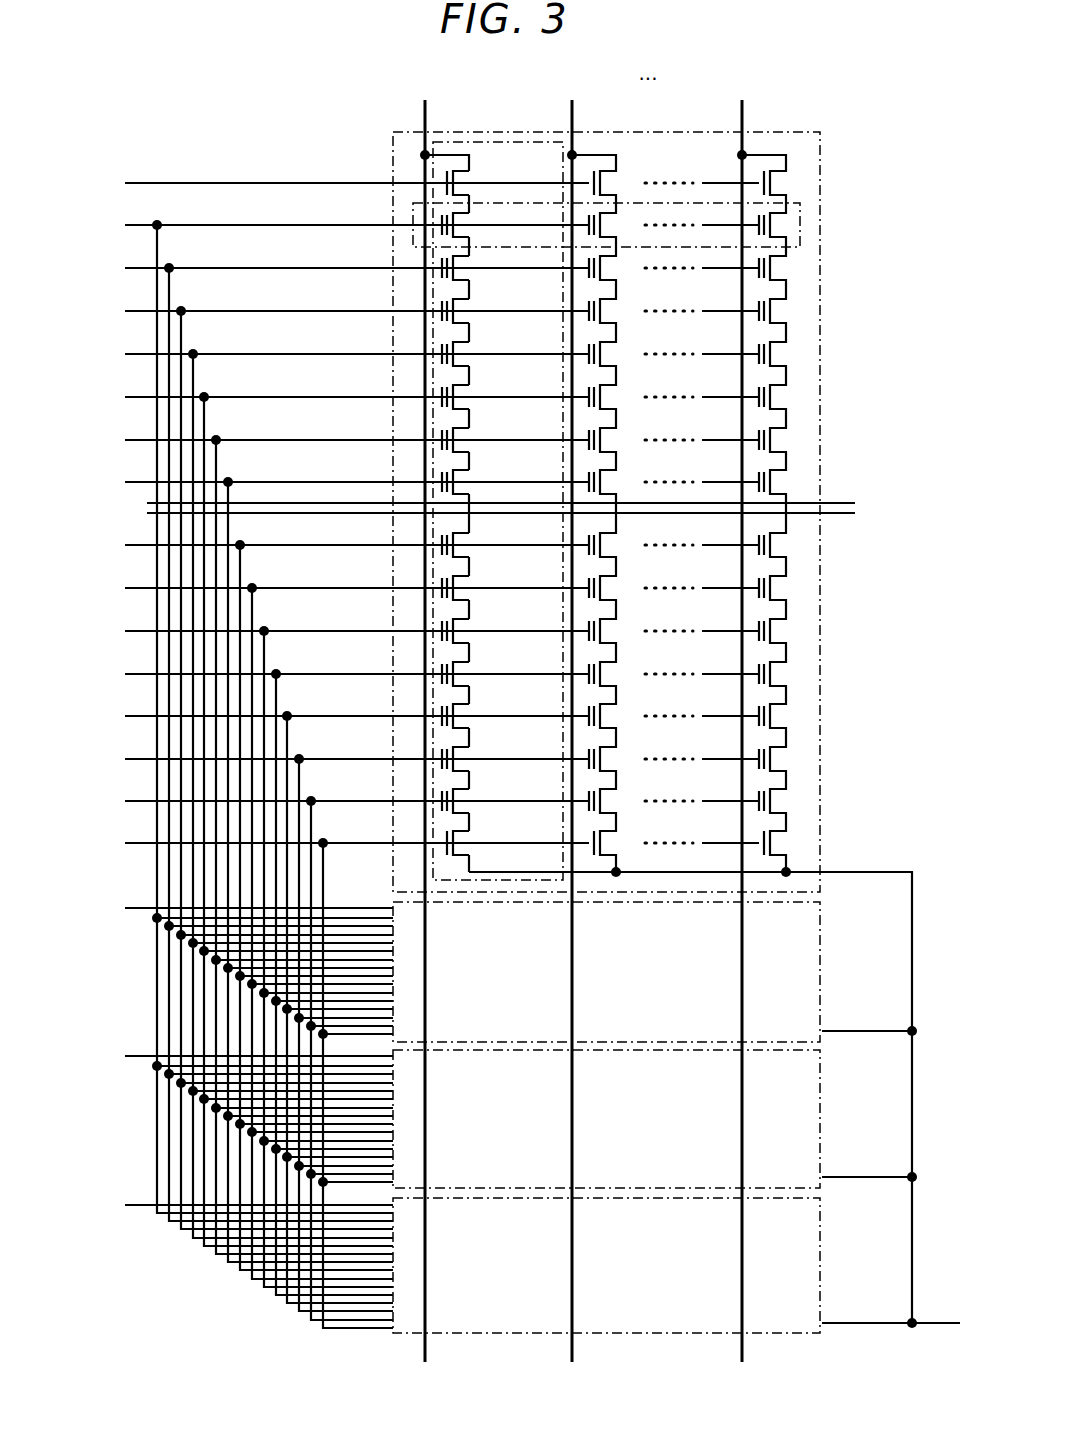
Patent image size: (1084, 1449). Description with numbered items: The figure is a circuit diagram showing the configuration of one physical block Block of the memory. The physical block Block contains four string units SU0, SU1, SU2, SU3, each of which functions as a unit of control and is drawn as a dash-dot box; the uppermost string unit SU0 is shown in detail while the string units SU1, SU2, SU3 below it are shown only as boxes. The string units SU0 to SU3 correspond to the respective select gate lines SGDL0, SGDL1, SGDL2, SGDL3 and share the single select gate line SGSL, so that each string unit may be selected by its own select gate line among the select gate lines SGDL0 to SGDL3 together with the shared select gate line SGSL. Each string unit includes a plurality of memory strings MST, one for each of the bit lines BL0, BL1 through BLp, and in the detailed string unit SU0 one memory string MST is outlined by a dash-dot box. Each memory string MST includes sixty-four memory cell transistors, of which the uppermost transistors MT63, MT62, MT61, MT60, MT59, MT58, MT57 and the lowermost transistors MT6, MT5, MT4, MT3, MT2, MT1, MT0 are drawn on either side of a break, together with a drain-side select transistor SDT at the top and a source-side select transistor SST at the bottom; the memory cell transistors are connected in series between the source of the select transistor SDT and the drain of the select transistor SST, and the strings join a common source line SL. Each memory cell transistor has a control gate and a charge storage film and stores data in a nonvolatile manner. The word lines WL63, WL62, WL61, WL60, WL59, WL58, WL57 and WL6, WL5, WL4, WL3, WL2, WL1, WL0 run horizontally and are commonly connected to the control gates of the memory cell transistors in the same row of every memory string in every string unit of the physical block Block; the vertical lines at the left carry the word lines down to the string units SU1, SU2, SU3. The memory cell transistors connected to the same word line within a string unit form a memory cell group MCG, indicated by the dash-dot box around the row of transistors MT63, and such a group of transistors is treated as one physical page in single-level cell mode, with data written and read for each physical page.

The physical block Block is at (306, 108).
The bit line BL0 is at (424, 717).
The bit line BL1 is at (571, 717).
The bit line BLp is at (741, 717).
The memory string MST is at (498, 140).
The memory cell group MCG is at (800, 222).
The select transistor SDT is at (473, 186).
The select transistor SST is at (473, 846).
The memory cell transistor MT63 is at (473, 228).
The memory cell transistor MT62 is at (473, 271).
The memory cell transistor MT61 is at (473, 314).
The memory cell transistor MT60 is at (473, 357).
The memory cell transistor MT59 is at (473, 400).
The memory cell transistor MT58 is at (473, 443).
The memory cell transistor MT57 is at (473, 485).
The memory cell transistor MT6 is at (473, 548).
The memory cell transistor MT5 is at (473, 591).
The memory cell transistor MT4 is at (473, 634).
The memory cell transistor MT3 is at (473, 677).
The memory cell transistor MT2 is at (473, 719).
The memory cell transistor MT1 is at (473, 762).
The memory cell transistor MT0 is at (473, 804).
The select gate line SGDL0 is at (403, 183).
The select gate line SGDL1 is at (220, 908).
The select gate line SGDL2 is at (220, 1056).
The select gate line SGDL3 is at (220, 1205).
The select gate line SGSL is at (412, 1079).
The word line WL63 is at (409, 713).
The word line WL62 is at (409, 738).
The word line WL61 is at (409, 764).
The word line WL60 is at (409, 790).
The word line WL59 is at (409, 815).
The word line WL58 is at (409, 841).
The word line WL57 is at (409, 866).
The word line WL6 is at (416, 901).
The word line WL5 is at (416, 927).
The word line WL4 is at (416, 953).
The word line WL3 is at (416, 978).
The word line WL2 is at (416, 1003).
The word line WL1 is at (416, 1029).
The word line WL0 is at (416, 1054).
The string unit SU0 is at (822, 428).
The string unit SU1 is at (822, 951).
The string unit SU2 is at (822, 1098).
The string unit SU3 is at (822, 1244).
The source line SL is at (714, 1097).